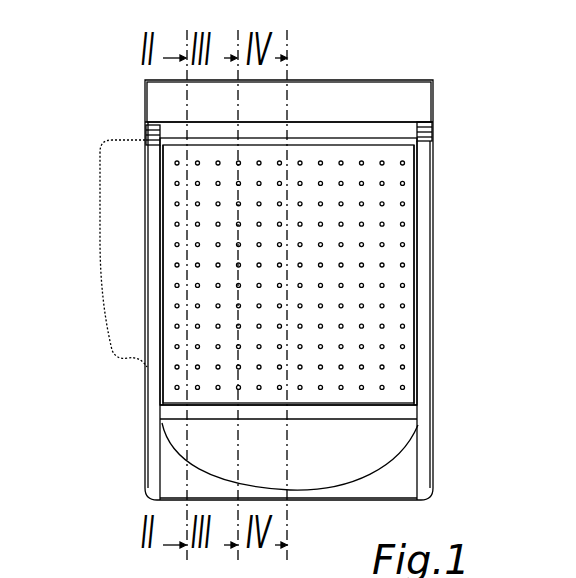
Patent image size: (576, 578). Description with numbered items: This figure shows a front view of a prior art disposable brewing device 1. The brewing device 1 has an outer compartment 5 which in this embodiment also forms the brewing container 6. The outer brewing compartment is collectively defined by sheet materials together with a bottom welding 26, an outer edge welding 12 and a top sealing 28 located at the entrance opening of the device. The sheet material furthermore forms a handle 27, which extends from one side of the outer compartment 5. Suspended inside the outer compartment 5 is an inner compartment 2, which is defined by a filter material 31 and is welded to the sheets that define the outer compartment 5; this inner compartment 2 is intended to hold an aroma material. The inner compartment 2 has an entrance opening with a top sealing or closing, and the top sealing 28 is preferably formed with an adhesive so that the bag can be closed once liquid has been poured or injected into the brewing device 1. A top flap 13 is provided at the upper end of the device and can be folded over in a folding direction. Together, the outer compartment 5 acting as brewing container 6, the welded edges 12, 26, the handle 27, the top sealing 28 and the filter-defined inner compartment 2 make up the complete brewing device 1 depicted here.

The brewing device 1 is at (472, 88).
The inner compartment 2 is at (210, 253).
The outer compartment 5 is at (402, 411).
The brewing container 6 is at (392, 439).
The outer edge welding 12 is at (158, 485).
The top flap 13 is at (409, 102).
The bottom welding 26 is at (342, 490).
The handle 27 is at (124, 303).
The top sealing 28 is at (306, 133).
The filter material 31 is at (412, 358).